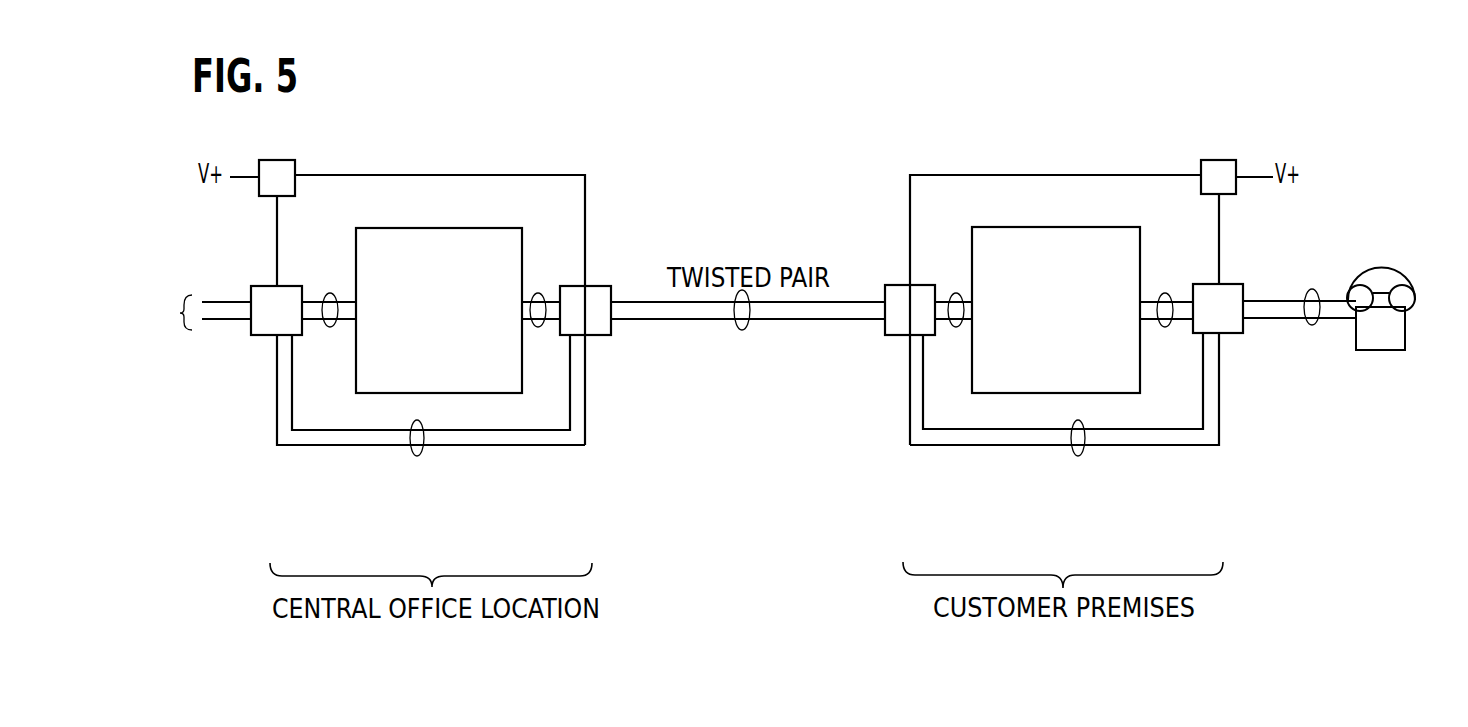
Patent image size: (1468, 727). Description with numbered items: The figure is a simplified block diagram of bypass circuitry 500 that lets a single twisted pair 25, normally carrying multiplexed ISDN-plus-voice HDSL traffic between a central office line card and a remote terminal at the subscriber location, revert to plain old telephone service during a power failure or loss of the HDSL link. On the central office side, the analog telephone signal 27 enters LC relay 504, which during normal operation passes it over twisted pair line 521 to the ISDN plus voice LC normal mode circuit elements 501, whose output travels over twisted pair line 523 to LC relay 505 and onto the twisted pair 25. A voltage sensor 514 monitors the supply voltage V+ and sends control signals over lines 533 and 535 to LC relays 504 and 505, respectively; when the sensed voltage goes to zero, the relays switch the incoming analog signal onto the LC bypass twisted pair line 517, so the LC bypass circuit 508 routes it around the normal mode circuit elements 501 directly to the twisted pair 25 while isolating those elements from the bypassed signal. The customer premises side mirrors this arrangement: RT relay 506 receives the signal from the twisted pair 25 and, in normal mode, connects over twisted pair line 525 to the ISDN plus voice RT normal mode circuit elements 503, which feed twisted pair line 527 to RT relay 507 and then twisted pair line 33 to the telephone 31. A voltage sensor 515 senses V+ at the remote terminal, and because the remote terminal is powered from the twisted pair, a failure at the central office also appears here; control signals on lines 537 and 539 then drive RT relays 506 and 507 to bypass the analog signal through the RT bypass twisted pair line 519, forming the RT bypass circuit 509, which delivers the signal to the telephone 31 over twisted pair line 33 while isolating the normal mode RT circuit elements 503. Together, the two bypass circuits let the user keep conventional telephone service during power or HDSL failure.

The bypass circuitry 500 is at (1252, 75).
The LC normal mode circuit elements 501 is at (436, 228).
The RT normal mode circuit elements 503 is at (1060, 227).
The LC relay 504 is at (251, 335).
The LC relay 505 is at (600, 286).
The RT relay 506 is at (895, 285).
The RT relay 507 is at (1243, 284).
The LC bypass circuit 508 is at (364, 480).
The RT bypass circuit 509 is at (1004, 482).
The voltage sensor 514 is at (281, 160).
The voltage sensor 515 is at (1213, 160).
The LC bypass twisted pair line 517 is at (417, 456).
The RT bypass twisted pair line 519 is at (1078, 456).
The twisted pair line 521 is at (330, 293).
The twisted pair line 523 is at (537, 293).
The twisted pair line 525 is at (956, 293).
The twisted pair line 527 is at (1165, 293).
The control line 533 is at (375, 175).
The control line 535 is at (277, 232).
The control line 537 is at (1120, 175).
The control line 539 is at (1220, 230).
The single twisted pair 25 is at (742, 330).
The analog telephone signal 27 is at (180, 310).
The telephone 31 is at (1395, 350).
The twisted pair line 33 is at (1313, 325).